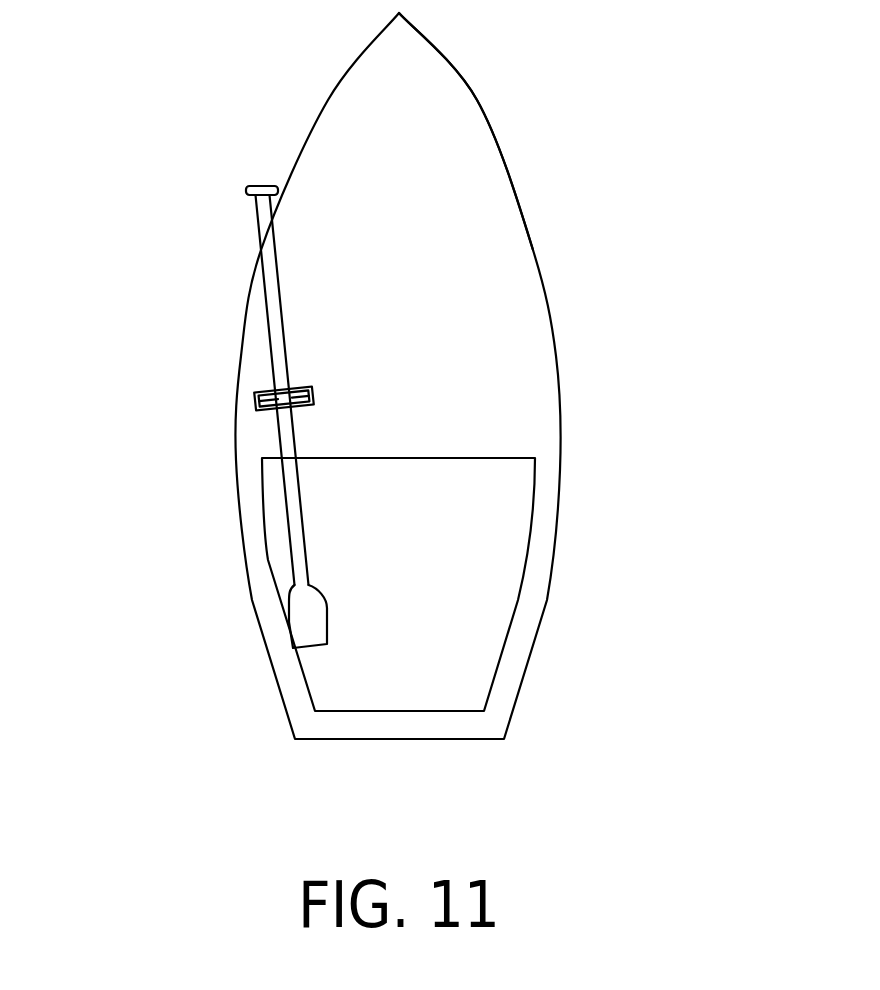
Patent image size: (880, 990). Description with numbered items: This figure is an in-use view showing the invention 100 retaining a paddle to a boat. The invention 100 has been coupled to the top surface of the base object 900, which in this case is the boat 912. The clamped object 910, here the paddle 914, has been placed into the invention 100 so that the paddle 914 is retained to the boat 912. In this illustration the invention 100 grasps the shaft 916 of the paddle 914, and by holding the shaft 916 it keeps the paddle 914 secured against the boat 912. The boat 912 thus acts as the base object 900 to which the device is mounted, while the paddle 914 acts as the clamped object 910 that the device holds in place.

The base object 900 is at (556, 356).
The boat 912 is at (462, 115).
The clamped object 910 is at (195, 392).
The paddle 914 is at (250, 187).
The shaft 916 is at (275, 346).
The invention 100 is at (257, 406).